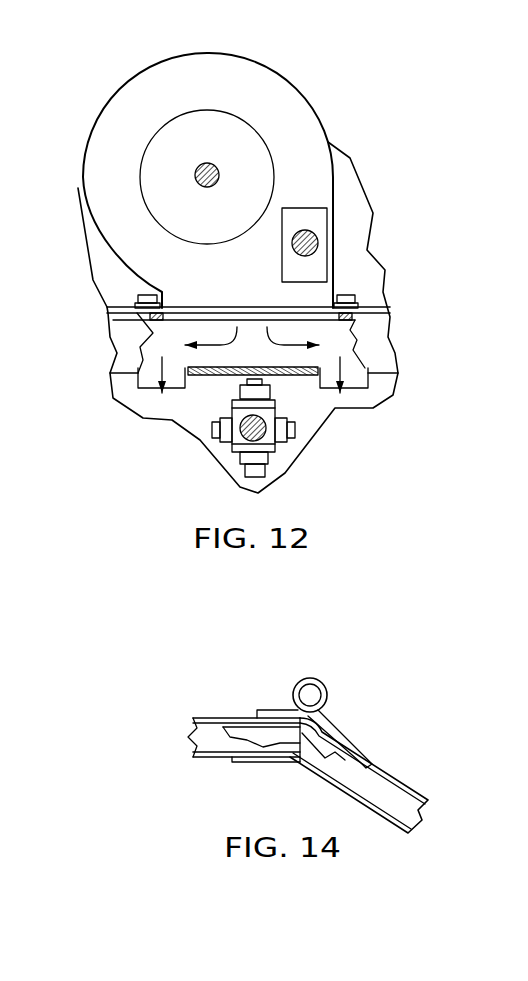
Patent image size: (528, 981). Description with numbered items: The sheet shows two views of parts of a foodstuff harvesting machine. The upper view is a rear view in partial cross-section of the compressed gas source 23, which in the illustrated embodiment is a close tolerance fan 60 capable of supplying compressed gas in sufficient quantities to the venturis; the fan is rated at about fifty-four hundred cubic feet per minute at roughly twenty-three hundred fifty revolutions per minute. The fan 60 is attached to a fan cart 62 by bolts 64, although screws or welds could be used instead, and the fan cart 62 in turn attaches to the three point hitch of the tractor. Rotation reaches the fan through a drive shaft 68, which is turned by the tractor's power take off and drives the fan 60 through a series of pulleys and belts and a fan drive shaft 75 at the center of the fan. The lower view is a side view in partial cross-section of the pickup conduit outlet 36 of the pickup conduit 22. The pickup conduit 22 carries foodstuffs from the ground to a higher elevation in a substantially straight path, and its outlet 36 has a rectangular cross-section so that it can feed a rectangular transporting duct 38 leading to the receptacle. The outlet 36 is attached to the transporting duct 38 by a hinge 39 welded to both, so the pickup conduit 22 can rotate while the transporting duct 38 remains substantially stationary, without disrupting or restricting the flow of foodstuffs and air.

In FIG. 12, the fan 60 is at (253, 84).
In FIG. 12, the fan drive shaft 75 is at (200, 172).
In FIG. 12, the compressed gas source 23 is at (343, 110).
In FIG. 12, the fan cart 62 is at (377, 343).
In FIG. 12, the bolts 64 is at (357, 296).
In FIG. 12, the drive shaft 68 is at (258, 433).
In FIG. 14, the rectangular transporting duct 38 is at (205, 718).
In FIG. 14, the pickup conduit 22 is at (402, 775).
In FIG. 14, the pickup conduit outlet 36 is at (336, 728).
In FIG. 14, the hinge 39 is at (328, 681).